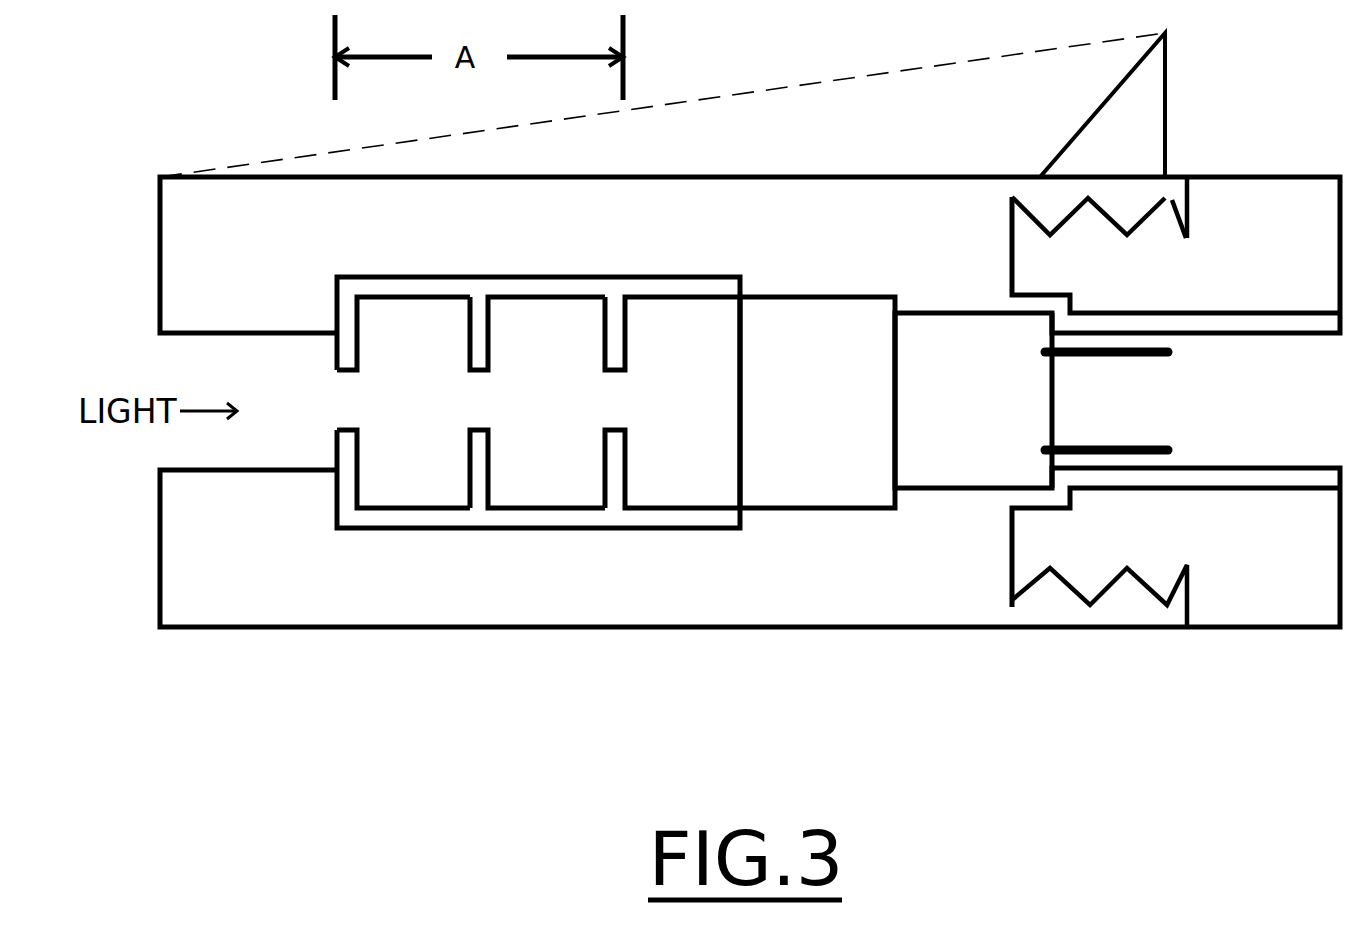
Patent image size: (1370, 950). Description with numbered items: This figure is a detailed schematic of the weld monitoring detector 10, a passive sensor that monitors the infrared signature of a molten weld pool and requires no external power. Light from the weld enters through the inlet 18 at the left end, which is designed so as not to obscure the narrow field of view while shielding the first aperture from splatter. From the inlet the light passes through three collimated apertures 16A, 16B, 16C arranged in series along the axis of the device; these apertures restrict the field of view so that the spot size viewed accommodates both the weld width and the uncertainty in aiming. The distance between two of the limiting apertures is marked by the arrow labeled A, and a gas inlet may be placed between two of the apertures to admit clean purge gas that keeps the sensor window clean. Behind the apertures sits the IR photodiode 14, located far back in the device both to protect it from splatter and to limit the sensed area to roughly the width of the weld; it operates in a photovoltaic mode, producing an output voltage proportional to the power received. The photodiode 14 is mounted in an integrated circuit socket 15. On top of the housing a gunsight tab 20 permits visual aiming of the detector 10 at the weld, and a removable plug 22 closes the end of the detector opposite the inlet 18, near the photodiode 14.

The detector 10 is at (1102, 746).
The IR photodiode 14 is at (817, 402).
The integrated circuit socket 15 is at (1031, 400).
The collimated aperture 16A is at (663, 402).
The collimated aperture 16B is at (528, 402).
The collimated aperture 16C is at (528, 402).
The inlet 18 is at (242, 493).
The gunsight tab 20 is at (1102, 105).
The removable plug 22 is at (1176, 402).